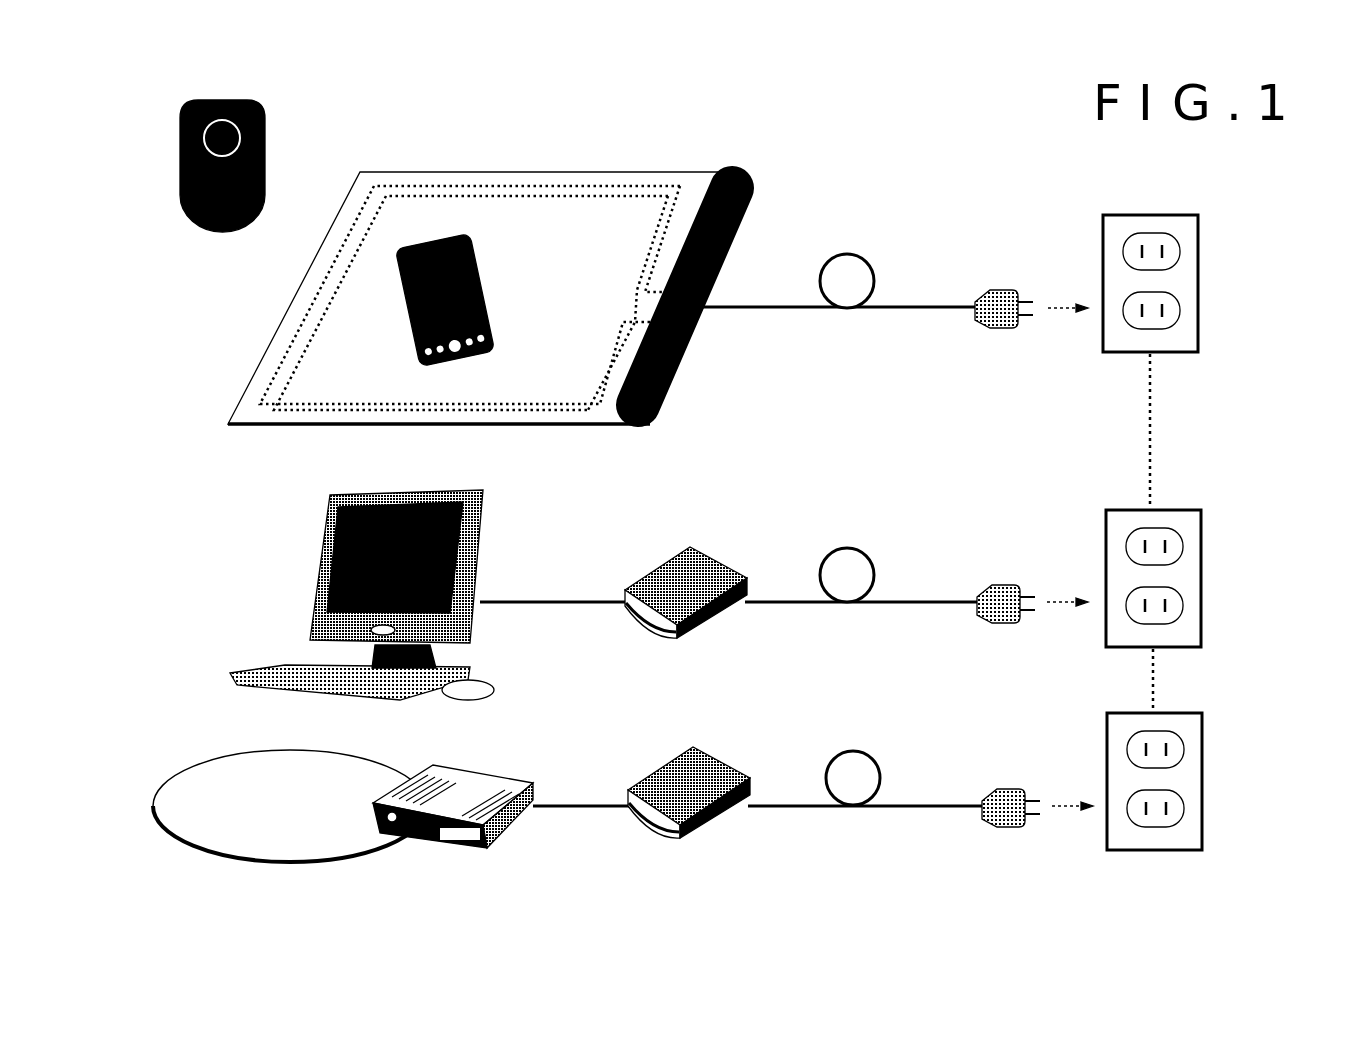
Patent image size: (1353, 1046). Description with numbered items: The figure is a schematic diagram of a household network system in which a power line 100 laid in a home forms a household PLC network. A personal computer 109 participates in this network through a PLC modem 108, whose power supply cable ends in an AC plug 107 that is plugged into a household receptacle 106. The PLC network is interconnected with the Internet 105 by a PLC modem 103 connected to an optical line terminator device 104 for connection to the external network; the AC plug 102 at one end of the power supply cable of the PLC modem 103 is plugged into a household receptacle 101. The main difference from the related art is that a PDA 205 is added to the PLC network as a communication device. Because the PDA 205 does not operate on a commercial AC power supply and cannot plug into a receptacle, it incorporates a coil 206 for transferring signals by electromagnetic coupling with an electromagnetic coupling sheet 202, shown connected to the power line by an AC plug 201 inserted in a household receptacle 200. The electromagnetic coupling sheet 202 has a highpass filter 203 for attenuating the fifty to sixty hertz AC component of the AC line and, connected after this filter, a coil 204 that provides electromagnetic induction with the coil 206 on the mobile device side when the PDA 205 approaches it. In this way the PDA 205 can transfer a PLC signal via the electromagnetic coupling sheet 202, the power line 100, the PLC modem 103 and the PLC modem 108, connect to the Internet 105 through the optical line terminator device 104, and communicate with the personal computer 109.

The power line 100 is at (1155, 680).
The household receptacle 101 is at (1199, 781).
The AC plug 102 is at (1016, 777).
The PLC modem 103 is at (702, 773).
The optical line terminator device 104 is at (483, 768).
The Internet 105 is at (197, 765).
The household receptacle 106 is at (1195, 578).
The AC plug 107 is at (1011, 574).
The PLC modem 108 is at (718, 560).
The personal computer 109 is at (484, 533).
The household receptacle 200 is at (1198, 247).
The AC plug 201 is at (1005, 290).
The electromagnetic coupling sheet 202 is at (552, 171).
The highpass filter 203 is at (693, 333).
The coil 204 is at (320, 407).
The PDA 205 is at (480, 287).
The coil 206 is at (218, 120).